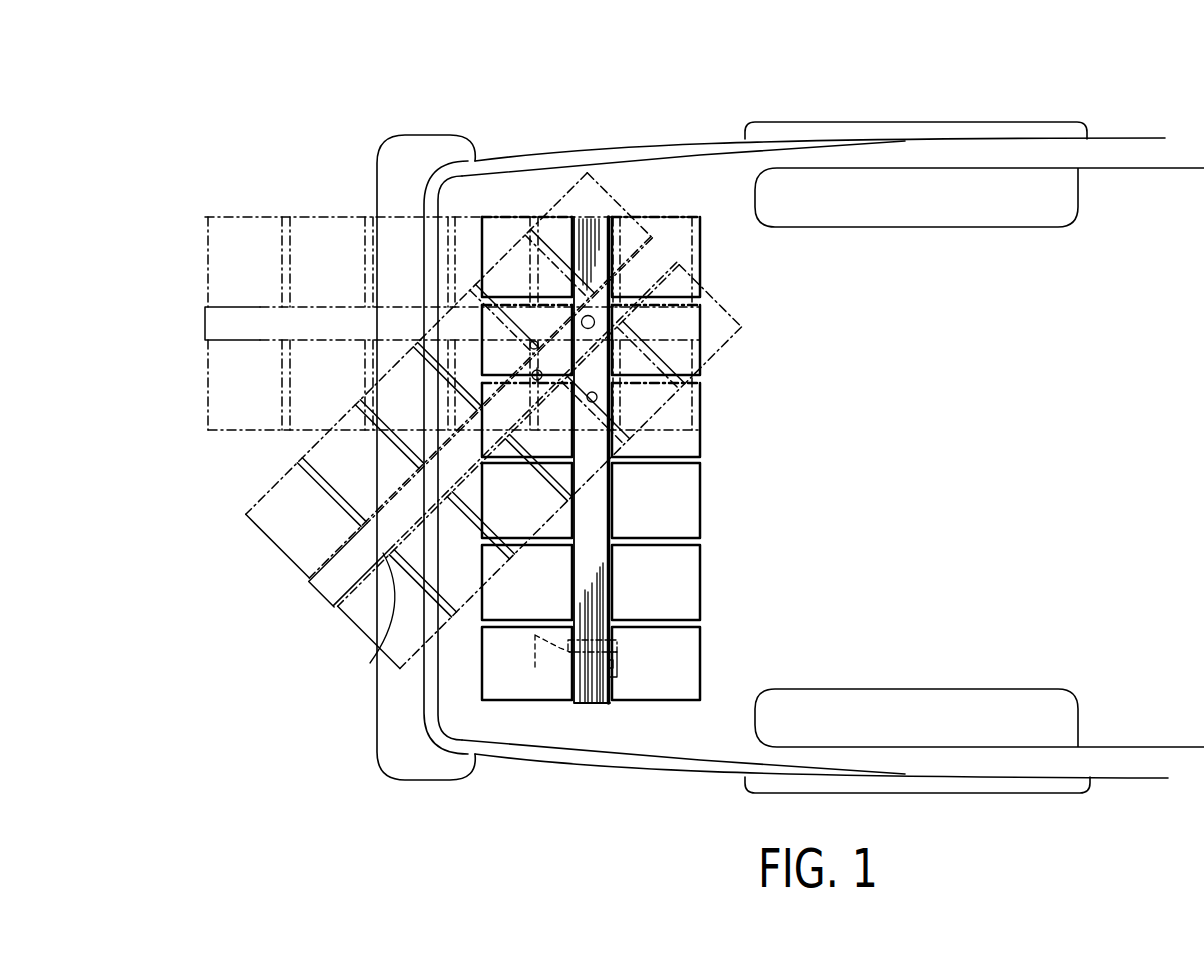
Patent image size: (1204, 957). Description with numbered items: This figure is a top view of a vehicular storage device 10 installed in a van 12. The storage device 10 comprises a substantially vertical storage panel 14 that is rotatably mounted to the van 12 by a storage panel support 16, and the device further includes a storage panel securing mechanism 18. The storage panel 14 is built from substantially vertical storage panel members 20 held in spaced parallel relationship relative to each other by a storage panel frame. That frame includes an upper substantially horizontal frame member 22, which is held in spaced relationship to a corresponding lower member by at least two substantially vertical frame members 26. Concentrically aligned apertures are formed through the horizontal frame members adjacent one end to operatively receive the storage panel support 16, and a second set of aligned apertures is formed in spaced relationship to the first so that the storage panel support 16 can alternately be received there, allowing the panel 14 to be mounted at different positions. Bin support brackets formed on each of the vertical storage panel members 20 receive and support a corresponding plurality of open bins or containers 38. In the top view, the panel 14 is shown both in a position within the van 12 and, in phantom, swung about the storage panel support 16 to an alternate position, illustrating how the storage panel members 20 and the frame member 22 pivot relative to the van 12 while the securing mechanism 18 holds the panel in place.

The vehicular storage device 10 is at (763, 392).
The van 12 is at (753, 83).
The substantially vertical storage panel 14 is at (670, 533).
The storage panel support 16 is at (600, 246).
The storage panel securing mechanism 18 is at (617, 667).
The substantially vertical storage panel members 20 is at (323, 562).
The upper substantially horizontal frame member 22 is at (332, 593).
The substantially vertical frame members 26 is at (604, 261).
The open bins or containers 38 is at (242, 215).